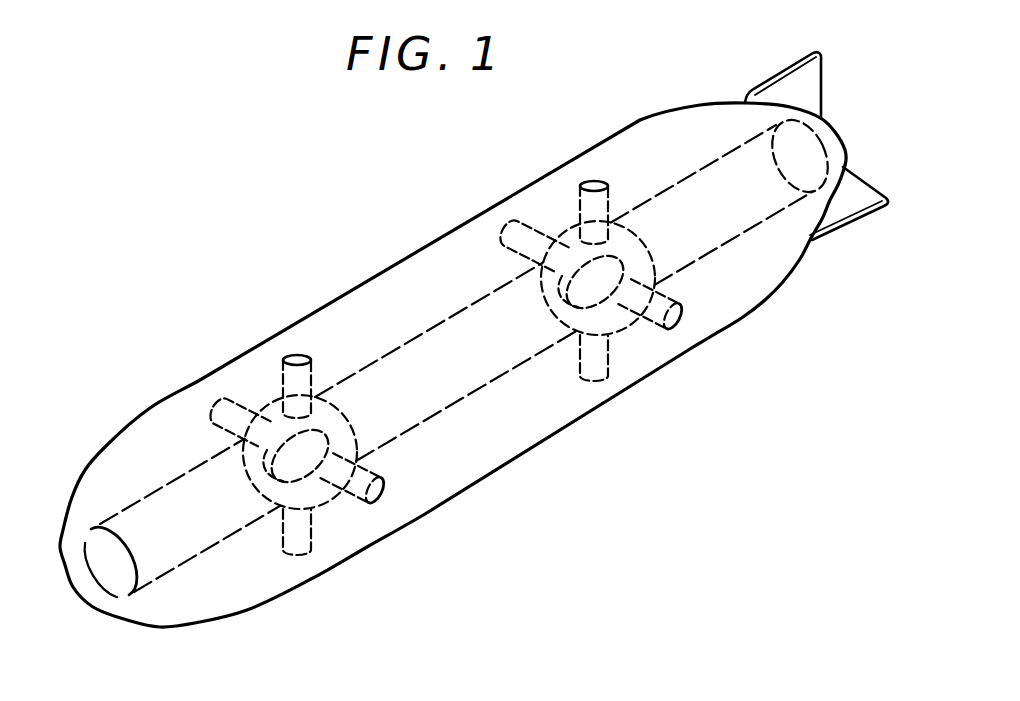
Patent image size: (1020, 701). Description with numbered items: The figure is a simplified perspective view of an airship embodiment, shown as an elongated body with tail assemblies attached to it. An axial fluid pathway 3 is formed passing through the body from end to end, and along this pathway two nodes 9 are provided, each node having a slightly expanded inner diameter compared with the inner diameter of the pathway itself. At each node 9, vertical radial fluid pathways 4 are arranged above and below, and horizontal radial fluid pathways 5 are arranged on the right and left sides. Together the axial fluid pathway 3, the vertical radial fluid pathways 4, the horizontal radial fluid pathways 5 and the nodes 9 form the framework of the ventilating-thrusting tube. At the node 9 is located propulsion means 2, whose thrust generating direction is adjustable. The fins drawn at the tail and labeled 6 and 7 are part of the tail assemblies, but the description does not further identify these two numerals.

The propulsion means 2 is at (277, 472).
The axial fluid pathway 3 is at (477, 366).
The vertical radial fluid pathways 4 is at (285, 362).
The horizontal radial fluid pathways 5 is at (220, 400).
The upper fin 6 is at (767, 90).
The lower fin 7 is at (840, 210).
The node 9 is at (350, 440).